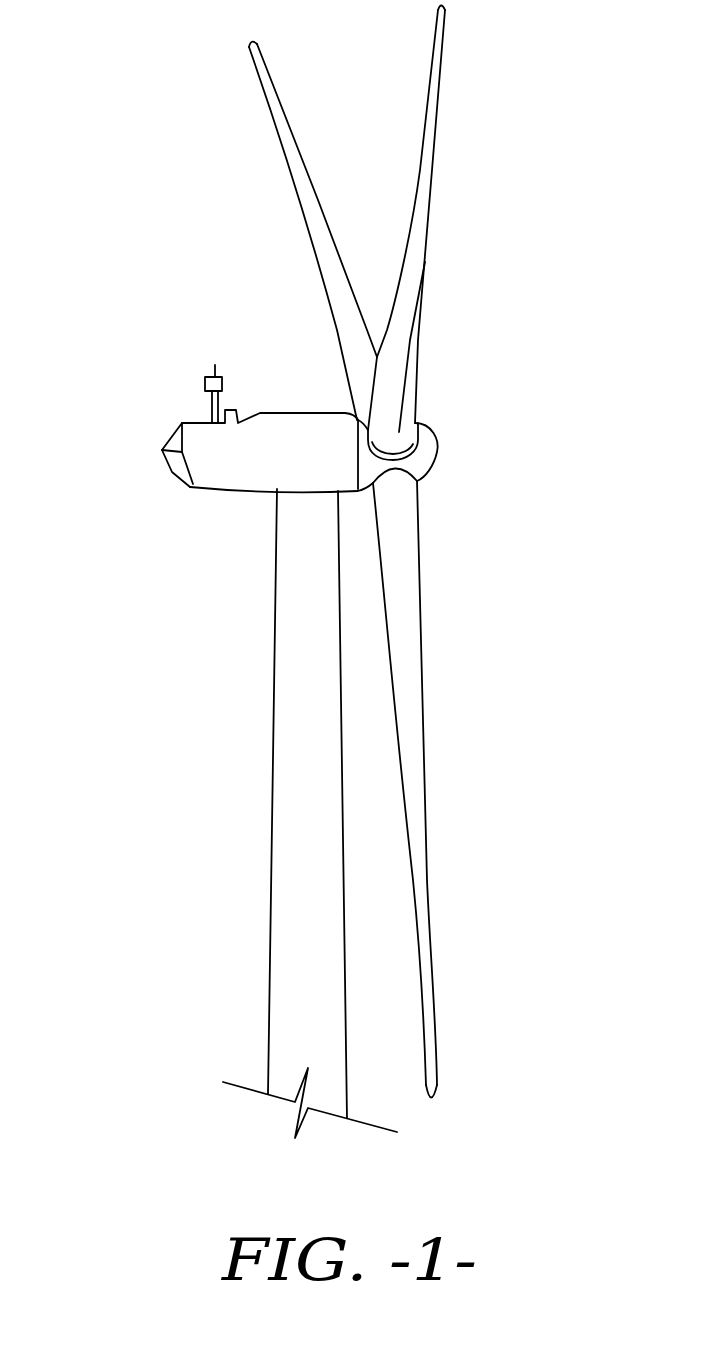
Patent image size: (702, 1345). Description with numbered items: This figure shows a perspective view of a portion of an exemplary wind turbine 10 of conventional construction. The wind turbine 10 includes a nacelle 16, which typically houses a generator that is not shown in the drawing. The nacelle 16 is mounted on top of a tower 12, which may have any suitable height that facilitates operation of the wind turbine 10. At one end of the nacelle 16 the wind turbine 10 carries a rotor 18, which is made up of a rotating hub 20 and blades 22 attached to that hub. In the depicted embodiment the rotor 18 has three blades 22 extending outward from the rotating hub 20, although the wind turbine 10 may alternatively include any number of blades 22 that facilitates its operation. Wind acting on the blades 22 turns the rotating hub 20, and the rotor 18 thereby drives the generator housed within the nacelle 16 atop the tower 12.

The wind turbine 10 is at (113, 120).
The tower 12 is at (270, 882).
The nacelle 16 is at (233, 492).
The rotor 18 is at (530, 432).
The rotating hub 20 is at (438, 449).
The blades 22 is at (312, 183).